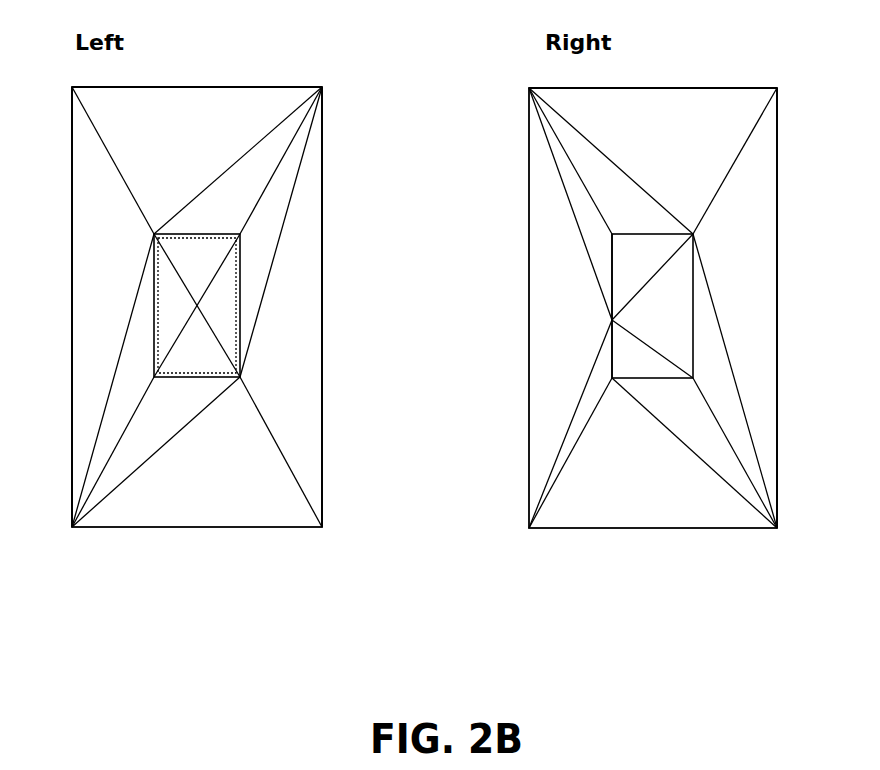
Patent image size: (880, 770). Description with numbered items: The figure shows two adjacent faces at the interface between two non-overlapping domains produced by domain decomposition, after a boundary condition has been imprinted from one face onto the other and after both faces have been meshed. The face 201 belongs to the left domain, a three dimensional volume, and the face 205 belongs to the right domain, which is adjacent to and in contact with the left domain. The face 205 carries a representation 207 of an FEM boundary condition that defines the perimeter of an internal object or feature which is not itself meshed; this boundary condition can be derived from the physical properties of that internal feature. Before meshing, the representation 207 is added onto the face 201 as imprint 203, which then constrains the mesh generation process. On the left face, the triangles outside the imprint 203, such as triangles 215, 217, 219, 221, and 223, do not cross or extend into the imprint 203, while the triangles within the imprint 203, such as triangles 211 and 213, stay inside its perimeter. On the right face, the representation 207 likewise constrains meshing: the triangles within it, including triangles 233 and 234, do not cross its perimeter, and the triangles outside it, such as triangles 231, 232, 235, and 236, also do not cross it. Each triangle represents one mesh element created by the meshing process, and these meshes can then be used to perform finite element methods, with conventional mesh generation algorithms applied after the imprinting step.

The face 201 is at (140, 545).
The imprint 203 is at (217, 389).
The face 205 is at (700, 536).
The representation 207 is at (695, 328).
The triangle 211 is at (227, 282).
The triangle 213 is at (200, 348).
The triangle 215 is at (88, 208).
The triangle 217 is at (203, 100).
The triangle 219 is at (313, 175).
The triangle 221 is at (291, 131).
The triangle 223 is at (265, 462).
The triangle 231 is at (700, 103).
The triangle 232 is at (758, 180).
The triangle 233 is at (617, 270).
The triangle 234 is at (620, 356).
The triangle 235 is at (705, 433).
The triangle 236 is at (660, 485).